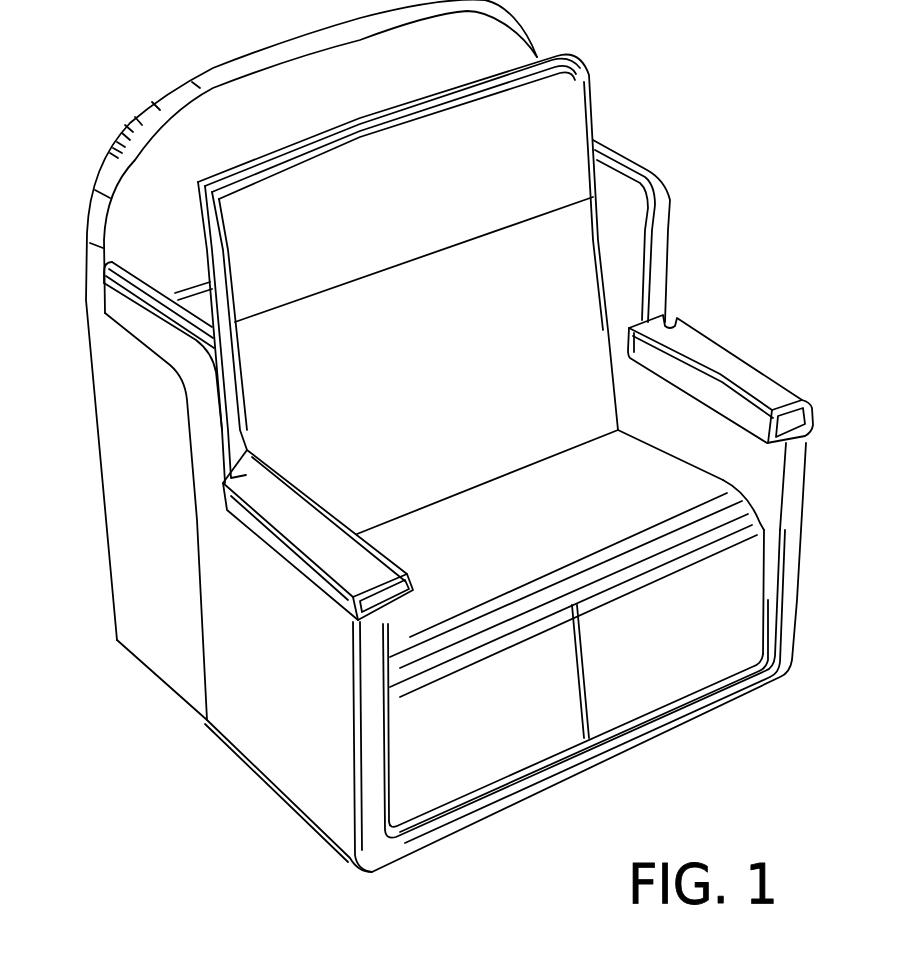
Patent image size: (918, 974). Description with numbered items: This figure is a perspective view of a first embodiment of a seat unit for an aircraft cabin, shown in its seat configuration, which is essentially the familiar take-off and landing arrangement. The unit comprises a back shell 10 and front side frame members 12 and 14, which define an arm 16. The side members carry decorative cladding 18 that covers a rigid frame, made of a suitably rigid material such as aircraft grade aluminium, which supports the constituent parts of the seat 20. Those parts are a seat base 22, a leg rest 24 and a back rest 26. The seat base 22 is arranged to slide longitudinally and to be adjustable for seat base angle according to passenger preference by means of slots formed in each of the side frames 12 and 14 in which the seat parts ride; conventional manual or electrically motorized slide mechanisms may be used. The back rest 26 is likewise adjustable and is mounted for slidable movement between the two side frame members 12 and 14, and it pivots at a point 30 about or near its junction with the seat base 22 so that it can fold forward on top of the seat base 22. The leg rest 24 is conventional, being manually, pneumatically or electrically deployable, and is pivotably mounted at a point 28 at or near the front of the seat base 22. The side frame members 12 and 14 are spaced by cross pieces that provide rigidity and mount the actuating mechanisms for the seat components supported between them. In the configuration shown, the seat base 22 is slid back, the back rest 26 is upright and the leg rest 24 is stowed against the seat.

The back shell 10 is at (113, 147).
The front side frame member 12 is at (262, 751).
The front side frame member 14 is at (828, 453).
The arm 16 is at (767, 407).
The decorative cladding 18 is at (208, 599).
The seat 20 is at (630, 460).
The seat base 22 is at (457, 607).
The leg rest 24 is at (670, 683).
The back rest 26 is at (580, 271).
The pivot point 28 is at (750, 512).
The pivot point 30 is at (437, 503).